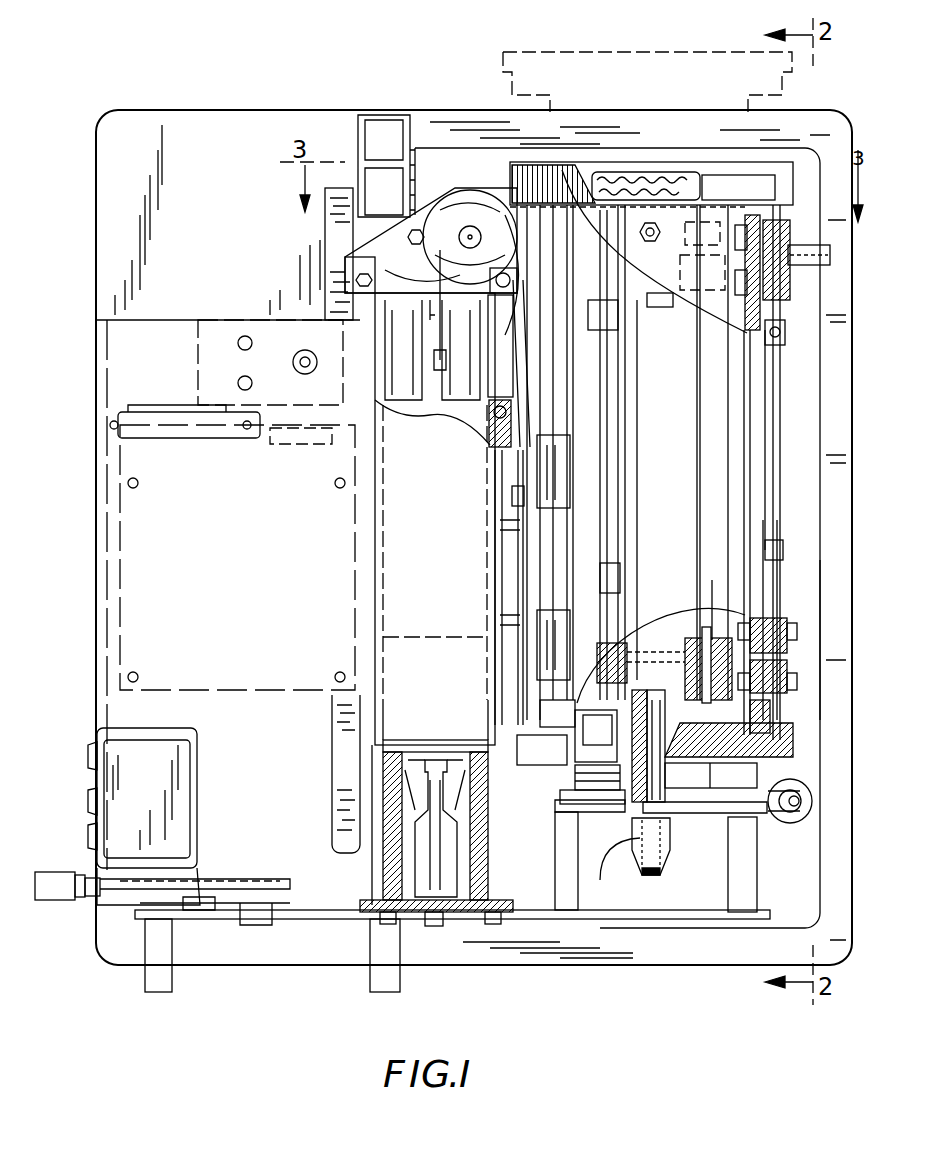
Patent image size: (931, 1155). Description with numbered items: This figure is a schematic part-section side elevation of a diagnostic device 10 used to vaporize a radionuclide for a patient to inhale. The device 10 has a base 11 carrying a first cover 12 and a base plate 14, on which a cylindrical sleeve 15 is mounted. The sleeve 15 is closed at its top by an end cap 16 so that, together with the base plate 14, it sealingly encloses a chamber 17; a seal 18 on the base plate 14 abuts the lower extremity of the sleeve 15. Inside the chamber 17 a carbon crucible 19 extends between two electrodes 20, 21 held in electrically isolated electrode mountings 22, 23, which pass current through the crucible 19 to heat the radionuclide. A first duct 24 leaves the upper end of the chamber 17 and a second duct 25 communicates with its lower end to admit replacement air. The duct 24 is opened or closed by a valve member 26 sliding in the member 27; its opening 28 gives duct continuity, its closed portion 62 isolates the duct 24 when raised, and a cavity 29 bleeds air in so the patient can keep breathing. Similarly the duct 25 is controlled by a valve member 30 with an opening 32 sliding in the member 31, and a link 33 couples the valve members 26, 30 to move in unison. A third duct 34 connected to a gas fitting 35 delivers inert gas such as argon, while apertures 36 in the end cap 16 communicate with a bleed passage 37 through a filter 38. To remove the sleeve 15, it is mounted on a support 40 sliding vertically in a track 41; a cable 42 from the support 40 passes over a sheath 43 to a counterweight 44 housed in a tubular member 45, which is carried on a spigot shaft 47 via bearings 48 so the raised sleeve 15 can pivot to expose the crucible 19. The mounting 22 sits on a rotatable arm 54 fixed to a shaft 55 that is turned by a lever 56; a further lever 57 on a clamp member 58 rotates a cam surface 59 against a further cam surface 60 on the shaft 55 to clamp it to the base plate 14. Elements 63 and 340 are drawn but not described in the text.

The diagnostic device 10 is at (200, 103).
The base 11 is at (290, 920).
The first cover 12 is at (96, 200).
The base plate 14 is at (798, 785).
The cylindrical sleeve 15 is at (745, 408).
The end cap 16 is at (738, 187).
The chamber 17 is at (682, 384).
The seal 18 is at (732, 782).
The carbon crucible 19 is at (660, 655).
The electrode 20 is at (610, 650).
The electrode 21 is at (717, 604).
The electrode mounting 22 is at (712, 645).
The electrode mounting 23 is at (578, 660).
The first duct 24 is at (805, 282).
The second duct 25 is at (805, 660).
The valve member 26 is at (780, 340).
The member 27 is at (774, 258).
The opening 28 is at (710, 271).
The cavity 29 is at (800, 245).
The valve member 30 is at (780, 640).
The member 31 is at (745, 740).
The opening 32 is at (772, 690).
The link 33 is at (778, 468).
The third duct 34 is at (592, 757).
The gas fitting 35 is at (72, 905).
The apertures 36 is at (708, 165).
The bleed passage 37 is at (654, 251).
The filter 38 is at (642, 172).
The support 40 is at (508, 494).
The track 41 is at (513, 395).
The cable 42 is at (505, 510).
The sheath 43 is at (482, 195).
The counterweight 44 is at (442, 398).
The tubular member 45 is at (360, 596).
The spigot shaft 47 is at (420, 862).
The bearings 48 is at (398, 785).
The rotatable arm 54 is at (578, 730).
The shaft 55 is at (672, 805).
The lever 56 is at (755, 840).
The further lever 57 is at (760, 818).
The clamp member 58 is at (675, 848).
The cam surface 59 is at (612, 872).
The further cam surface 60 is at (630, 828).
The closed portion 62 is at (740, 395).
The support leg 63 is at (560, 812).
The block 340 is at (535, 708).